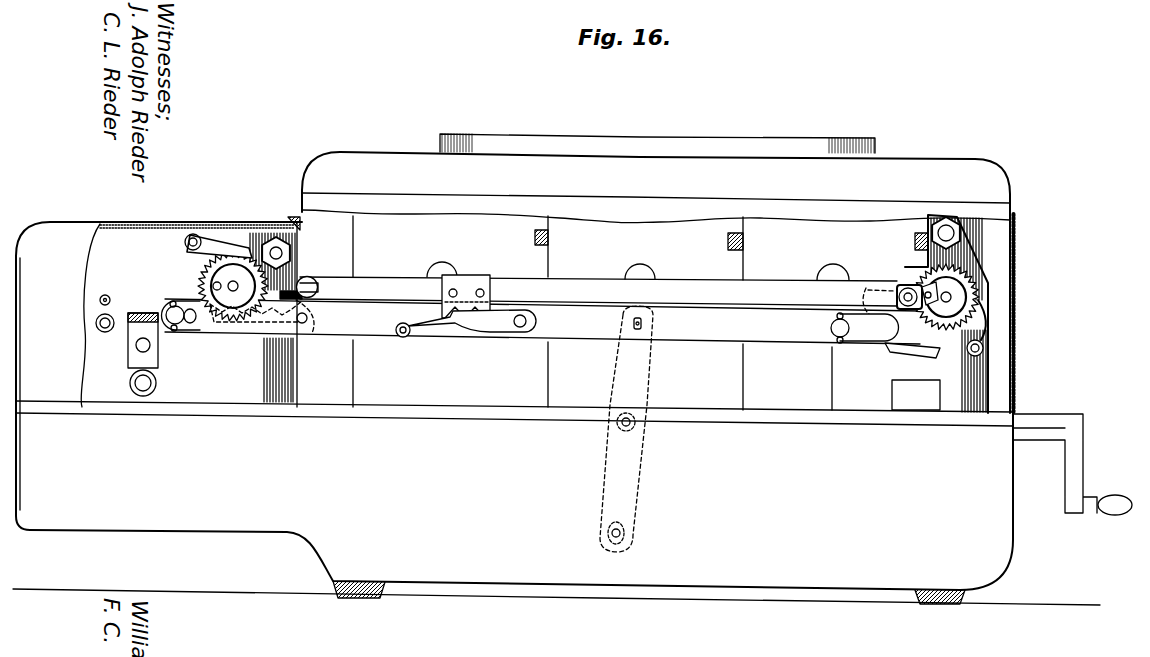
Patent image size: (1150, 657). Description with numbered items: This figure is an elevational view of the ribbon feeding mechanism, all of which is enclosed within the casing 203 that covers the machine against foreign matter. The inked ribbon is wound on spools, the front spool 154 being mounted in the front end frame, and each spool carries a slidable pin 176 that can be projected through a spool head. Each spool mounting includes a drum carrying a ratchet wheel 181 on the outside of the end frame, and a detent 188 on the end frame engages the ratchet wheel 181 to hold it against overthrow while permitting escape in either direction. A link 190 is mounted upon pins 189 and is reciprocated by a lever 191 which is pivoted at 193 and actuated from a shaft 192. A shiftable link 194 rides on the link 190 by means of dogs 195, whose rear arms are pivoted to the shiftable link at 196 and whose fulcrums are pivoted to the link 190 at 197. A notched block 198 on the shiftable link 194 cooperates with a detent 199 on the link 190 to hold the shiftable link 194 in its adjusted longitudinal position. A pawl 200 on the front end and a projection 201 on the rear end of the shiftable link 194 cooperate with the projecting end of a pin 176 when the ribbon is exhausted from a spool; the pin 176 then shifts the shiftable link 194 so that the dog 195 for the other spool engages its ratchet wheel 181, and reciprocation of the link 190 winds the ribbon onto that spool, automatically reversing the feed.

The spool 154 is at (986, 262).
The slidable pin 176 is at (213, 287).
The ratchet wheel 181 is at (246, 256).
The detent 188 is at (222, 226).
The pin 189 is at (180, 322).
The link 190 is at (692, 334).
The lever 191 is at (634, 453).
The shaft 192 is at (638, 539).
The pivot 193 is at (611, 429).
The shiftable link 194 is at (686, 279).
The dog 195 is at (306, 336).
The pivot 196 is at (321, 289).
The fulcrum pivot 197 is at (308, 318).
The notched block 198 is at (480, 276).
The detent 199 is at (500, 322).
The pawl 200 is at (837, 308).
The projection 201 is at (308, 278).
The casing 203 is at (972, 164).